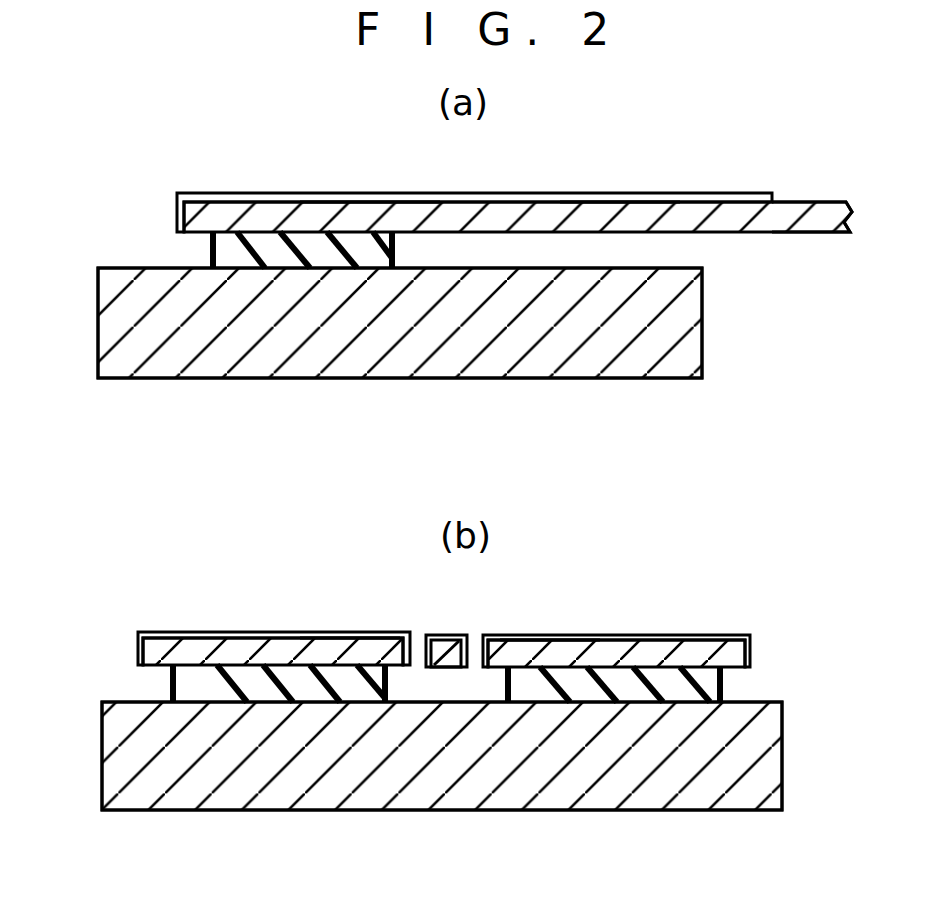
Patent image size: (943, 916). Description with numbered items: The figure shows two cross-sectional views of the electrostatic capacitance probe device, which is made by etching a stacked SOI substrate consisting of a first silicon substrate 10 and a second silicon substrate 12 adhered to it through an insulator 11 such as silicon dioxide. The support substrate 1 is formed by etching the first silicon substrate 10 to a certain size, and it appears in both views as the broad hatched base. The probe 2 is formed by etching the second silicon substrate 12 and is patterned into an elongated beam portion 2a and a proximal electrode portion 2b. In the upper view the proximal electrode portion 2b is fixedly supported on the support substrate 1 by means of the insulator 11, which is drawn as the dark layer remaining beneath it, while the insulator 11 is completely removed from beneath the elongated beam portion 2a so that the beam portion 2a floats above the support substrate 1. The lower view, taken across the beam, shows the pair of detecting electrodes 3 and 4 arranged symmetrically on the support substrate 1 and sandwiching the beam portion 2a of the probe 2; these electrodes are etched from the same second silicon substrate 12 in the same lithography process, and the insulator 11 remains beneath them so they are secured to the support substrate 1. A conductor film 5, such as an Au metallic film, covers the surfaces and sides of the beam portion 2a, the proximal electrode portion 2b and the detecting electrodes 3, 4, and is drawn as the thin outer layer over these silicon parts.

The support substrate 1 is at (565, 378).
The first silicon substrate 10 is at (404, 575).
The probe 2 is at (518, 376).
The elongated beam portion 2a is at (800, 231).
The proximal electrode portion 2b is at (370, 200).
The detecting electrode 3 is at (290, 650).
The detecting electrode 4 is at (602, 650).
The conductor film 5 is at (617, 201).
The insulator 11 is at (232, 252).
The second silicon substrate 12 is at (782, 236).